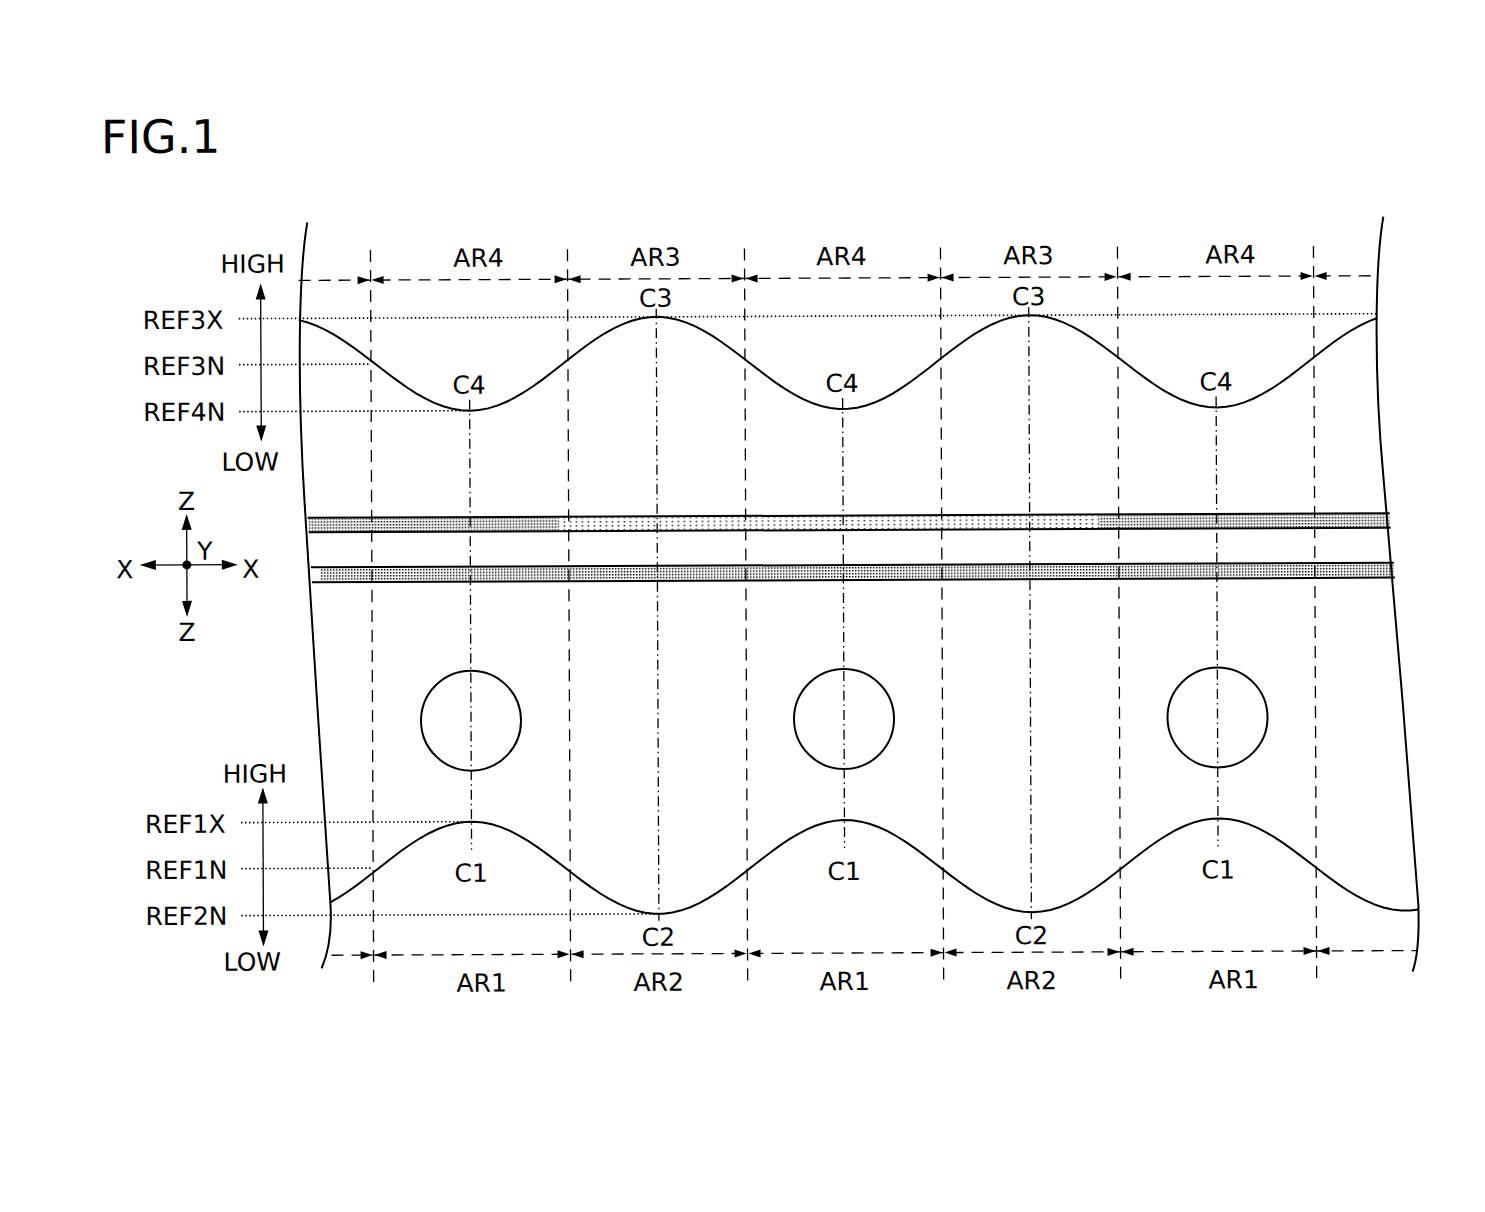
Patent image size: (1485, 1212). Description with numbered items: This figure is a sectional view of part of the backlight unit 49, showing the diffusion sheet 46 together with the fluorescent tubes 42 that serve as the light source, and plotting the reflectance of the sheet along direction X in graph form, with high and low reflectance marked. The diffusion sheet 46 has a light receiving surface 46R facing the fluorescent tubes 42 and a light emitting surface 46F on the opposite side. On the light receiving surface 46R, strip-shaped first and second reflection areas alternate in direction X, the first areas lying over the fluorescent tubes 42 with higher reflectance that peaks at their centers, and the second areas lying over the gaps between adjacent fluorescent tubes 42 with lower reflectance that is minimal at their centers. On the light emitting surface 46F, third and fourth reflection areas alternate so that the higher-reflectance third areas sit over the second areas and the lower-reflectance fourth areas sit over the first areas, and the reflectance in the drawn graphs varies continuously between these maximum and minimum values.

The backlight unit 49 is at (180, 270).
The fluorescent tube 42 is at (844, 719).
The diffusion sheet 46 is at (879, 547).
The light emitting surface 46F is at (1331, 490).
The light receiving surface 46R is at (1325, 585).